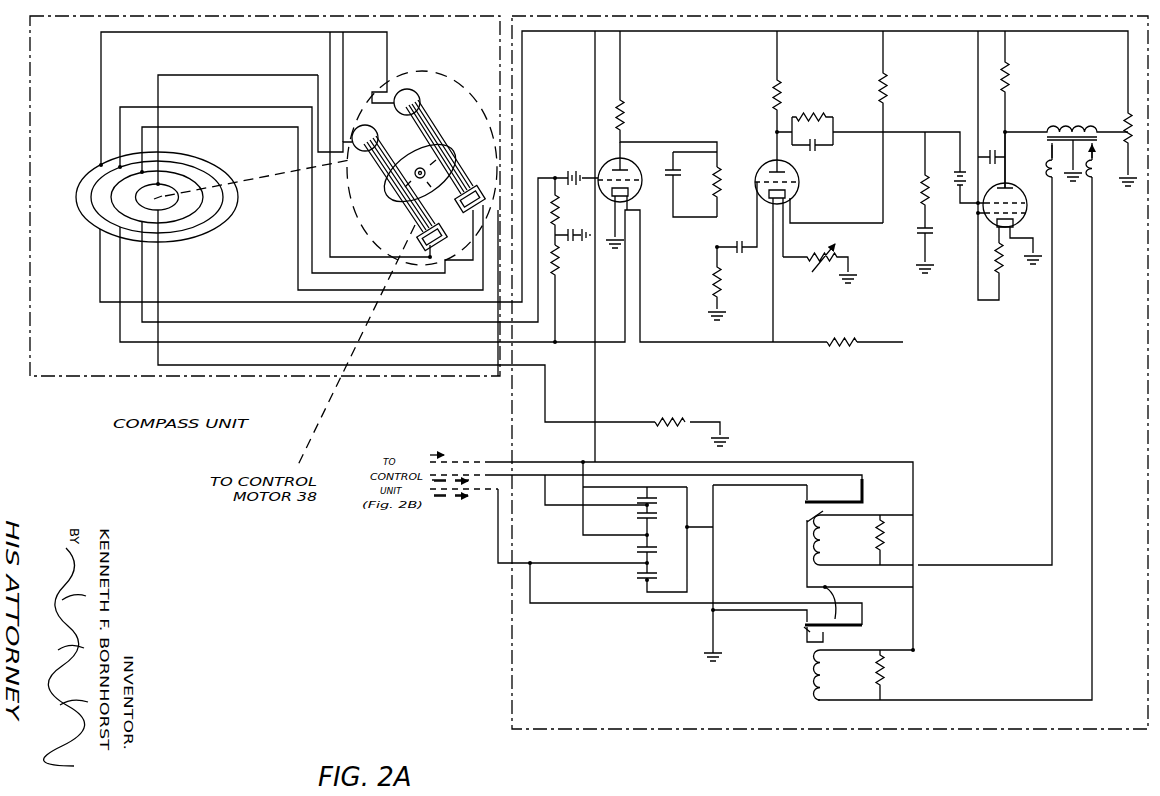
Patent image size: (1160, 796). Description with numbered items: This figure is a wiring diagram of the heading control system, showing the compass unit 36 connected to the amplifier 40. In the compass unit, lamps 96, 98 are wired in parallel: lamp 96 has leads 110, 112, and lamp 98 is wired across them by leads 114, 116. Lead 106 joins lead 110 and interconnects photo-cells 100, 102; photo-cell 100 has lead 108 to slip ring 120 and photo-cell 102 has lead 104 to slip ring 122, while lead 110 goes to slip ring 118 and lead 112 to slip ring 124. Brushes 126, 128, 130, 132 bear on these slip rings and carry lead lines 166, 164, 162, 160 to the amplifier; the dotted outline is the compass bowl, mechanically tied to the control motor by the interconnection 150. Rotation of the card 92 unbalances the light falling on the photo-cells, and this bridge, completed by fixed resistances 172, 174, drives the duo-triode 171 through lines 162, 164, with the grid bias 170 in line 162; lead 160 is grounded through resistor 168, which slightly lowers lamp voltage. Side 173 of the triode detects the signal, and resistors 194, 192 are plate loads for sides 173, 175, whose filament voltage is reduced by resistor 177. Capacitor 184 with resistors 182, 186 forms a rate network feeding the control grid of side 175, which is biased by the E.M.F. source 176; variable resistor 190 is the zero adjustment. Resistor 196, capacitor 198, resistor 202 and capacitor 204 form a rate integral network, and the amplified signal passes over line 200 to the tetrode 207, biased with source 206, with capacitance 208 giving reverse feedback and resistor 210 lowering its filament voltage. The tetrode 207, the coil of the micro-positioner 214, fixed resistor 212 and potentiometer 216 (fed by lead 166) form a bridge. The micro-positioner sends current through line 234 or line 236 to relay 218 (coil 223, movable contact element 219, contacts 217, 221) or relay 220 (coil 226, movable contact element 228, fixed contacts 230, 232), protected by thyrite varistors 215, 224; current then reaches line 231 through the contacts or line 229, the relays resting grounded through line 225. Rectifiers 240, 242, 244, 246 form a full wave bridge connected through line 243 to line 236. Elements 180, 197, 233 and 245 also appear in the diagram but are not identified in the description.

The compass unit 36 is at (452, 92).
The amplifier 40 is at (690, 712).
The card 92 is at (428, 160).
The lamp 96 is at (415, 90).
The lamp 98 is at (361, 151).
The photo-cell 100 is at (417, 240).
The photo-cell 102 is at (474, 186).
The lead 104 is at (141, 136).
The lead 106 is at (330, 62).
The lead 108 is at (123, 107).
The lead 110 is at (97, 98).
The lead 112 is at (181, 75).
The lead 114 is at (343, 63).
The lead 116 is at (317, 92).
The slip ring 118 is at (93, 162).
The slip ring 120 is at (94, 181).
The slip ring 122 is at (200, 168).
The slip ring 124 is at (166, 184).
The brush 126 is at (98, 233).
The brush 128 is at (116, 228).
The brush 130 is at (140, 222).
The brush 132 is at (158, 212).
The interconnection 150 is at (332, 392).
The lead line 160 is at (159, 262).
The lead line 162 is at (143, 282).
The lead line 164 is at (118, 284).
The lead line 166 is at (99, 279).
The resistor 168 is at (688, 419).
The grid bias 170 is at (575, 166).
The duo-triode 171 is at (613, 207).
The fixed resistance 172 is at (556, 272).
The side of triode 173 is at (611, 160).
The fixed resistance 174 is at (557, 206).
The side of triode 175 is at (770, 164).
The E.M.F. source 176 is at (745, 253).
The resistor 177 is at (844, 350).
The coupling network 180 is at (717, 142).
The resistor 182 is at (757, 172).
The capacitor 184 is at (673, 191).
The resistor 186 is at (712, 285).
The variable resistor 190 is at (821, 264).
The plate load resistor 192 is at (776, 97).
The plate load resistor 194 is at (624, 120).
The resistor 196 is at (808, 112).
The resistor 197 is at (880, 76).
The capacitor 198 is at (816, 152).
The line 200 is at (859, 134).
The resistor 202 is at (930, 198).
The capacitor 204 is at (932, 236).
The source 206 is at (958, 174).
The tetrode 207 is at (1028, 207).
The capacitance 208 is at (1000, 152).
The resistor 210 is at (1000, 272).
The fixed resistor 212 is at (1009, 82).
The micro-positioner 214 is at (1061, 130).
The thyrite varistor 215 is at (885, 540).
The potentiometer 216 is at (1127, 107).
The contact 217 is at (806, 524).
The relay 218 is at (822, 512).
The movable contact element 219 is at (865, 506).
The relay 220 is at (797, 630).
The contact 221 is at (802, 501).
The actuating coil 223 is at (804, 516).
The thyrite varistor 224 is at (885, 675).
The line 225 is at (715, 549).
The actuating coil 226 is at (818, 686).
The movable contact element 228 is at (862, 626).
The line 229 is at (838, 600).
The fixed contact 230 is at (806, 636).
The line 231 is at (484, 461).
The fixed contact 232 is at (802, 621).
The conductor 233 is at (498, 514).
The line 234 is at (1050, 356).
The line 236 is at (1093, 361).
The rectifier 240 is at (645, 579).
The rectifier 242 is at (645, 551).
The line 243 is at (585, 535).
The rectifier 244 is at (650, 516).
The conductor 245 is at (545, 505).
The rectifier 246 is at (640, 498).